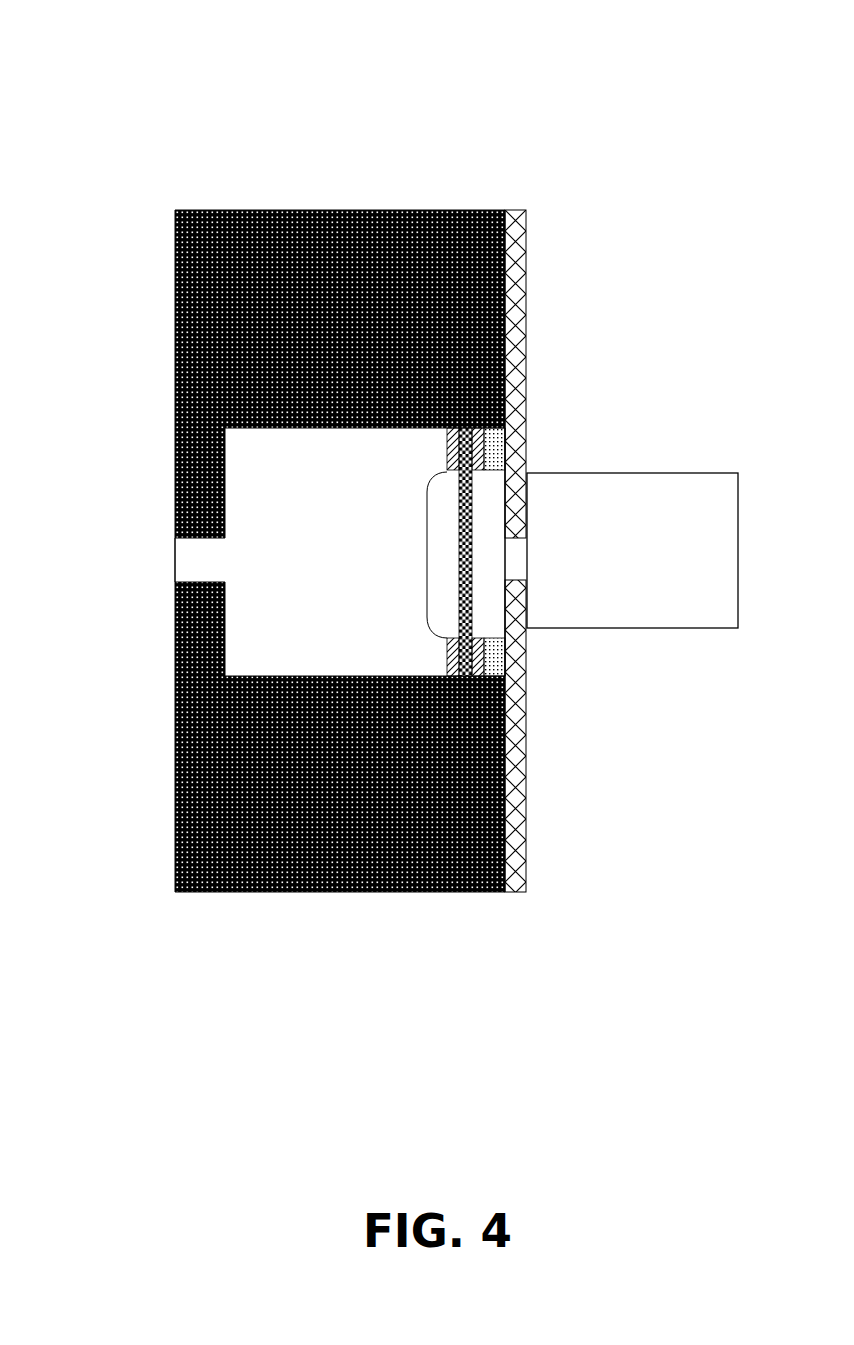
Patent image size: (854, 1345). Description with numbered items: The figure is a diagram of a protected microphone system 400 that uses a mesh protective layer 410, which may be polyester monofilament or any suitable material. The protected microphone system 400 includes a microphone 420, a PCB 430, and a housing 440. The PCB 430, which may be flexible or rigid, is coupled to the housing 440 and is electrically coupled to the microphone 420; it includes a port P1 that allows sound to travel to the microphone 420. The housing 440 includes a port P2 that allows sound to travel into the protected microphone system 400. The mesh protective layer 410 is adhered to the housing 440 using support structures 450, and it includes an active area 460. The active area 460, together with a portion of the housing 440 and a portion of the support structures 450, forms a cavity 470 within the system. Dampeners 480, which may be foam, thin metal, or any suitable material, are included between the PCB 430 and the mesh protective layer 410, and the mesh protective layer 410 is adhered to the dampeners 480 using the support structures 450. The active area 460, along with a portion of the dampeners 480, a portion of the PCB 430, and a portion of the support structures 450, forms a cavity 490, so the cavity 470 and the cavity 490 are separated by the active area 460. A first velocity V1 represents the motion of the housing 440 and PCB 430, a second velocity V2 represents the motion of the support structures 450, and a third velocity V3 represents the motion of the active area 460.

The protected microphone system 400 is at (114, 96).
The mesh protective layer 410 is at (458, 552).
The microphone 420 is at (633, 473).
The PCB 430 is at (514, 210).
The housing 440 is at (342, 210).
The support structures 450 is at (447, 438).
The active area 460 is at (427, 557).
The cavity 470 is at (240, 626).
The dampeners 480 is at (490, 638).
The cavity 490 is at (494, 622).
The port P1 is at (497, 559).
The port P2 is at (168, 557).
The first velocity V1 is at (143, 380).
The second velocity V2 is at (428, 655).
The third velocity V3 is at (440, 511).